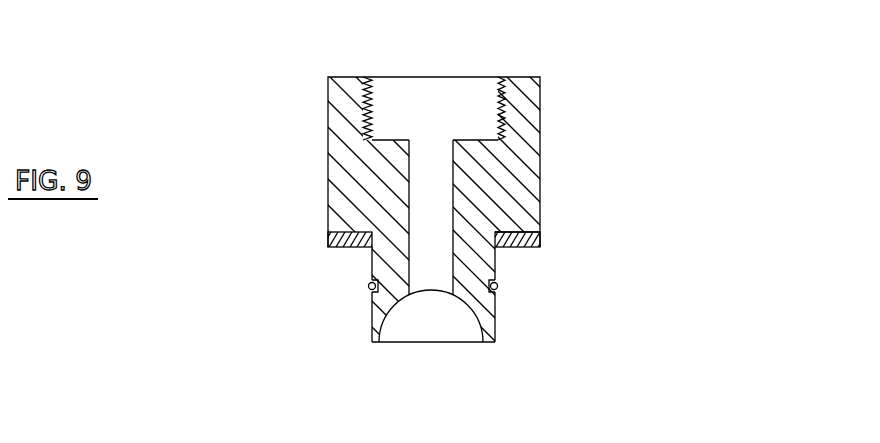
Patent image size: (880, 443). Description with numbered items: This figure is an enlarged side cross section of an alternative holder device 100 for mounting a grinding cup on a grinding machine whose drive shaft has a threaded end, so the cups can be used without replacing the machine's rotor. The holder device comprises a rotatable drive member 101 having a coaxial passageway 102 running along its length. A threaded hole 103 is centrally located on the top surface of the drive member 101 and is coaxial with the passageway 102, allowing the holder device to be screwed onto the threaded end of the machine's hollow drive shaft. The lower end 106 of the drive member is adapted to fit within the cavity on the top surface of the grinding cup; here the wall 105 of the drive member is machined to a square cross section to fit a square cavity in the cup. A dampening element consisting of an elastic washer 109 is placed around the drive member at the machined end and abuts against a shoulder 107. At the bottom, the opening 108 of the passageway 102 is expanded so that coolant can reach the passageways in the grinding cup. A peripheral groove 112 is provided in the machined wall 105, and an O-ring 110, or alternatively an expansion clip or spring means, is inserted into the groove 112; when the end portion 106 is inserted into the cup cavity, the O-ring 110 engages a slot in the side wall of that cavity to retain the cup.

The holder device 100 is at (481, 221).
The rotatable drive member 101 is at (543, 102).
The coaxial passageway 102 is at (438, 175).
The threaded hole 103 is at (421, 97).
The wall 105 is at (372, 328).
The end 106 is at (525, 313).
The shoulder 107 is at (510, 227).
The opening 108 is at (432, 322).
The elastic washer 109 is at (540, 237).
The O-ring 110 is at (367, 286).
The peripheral groove 112 is at (377, 283).